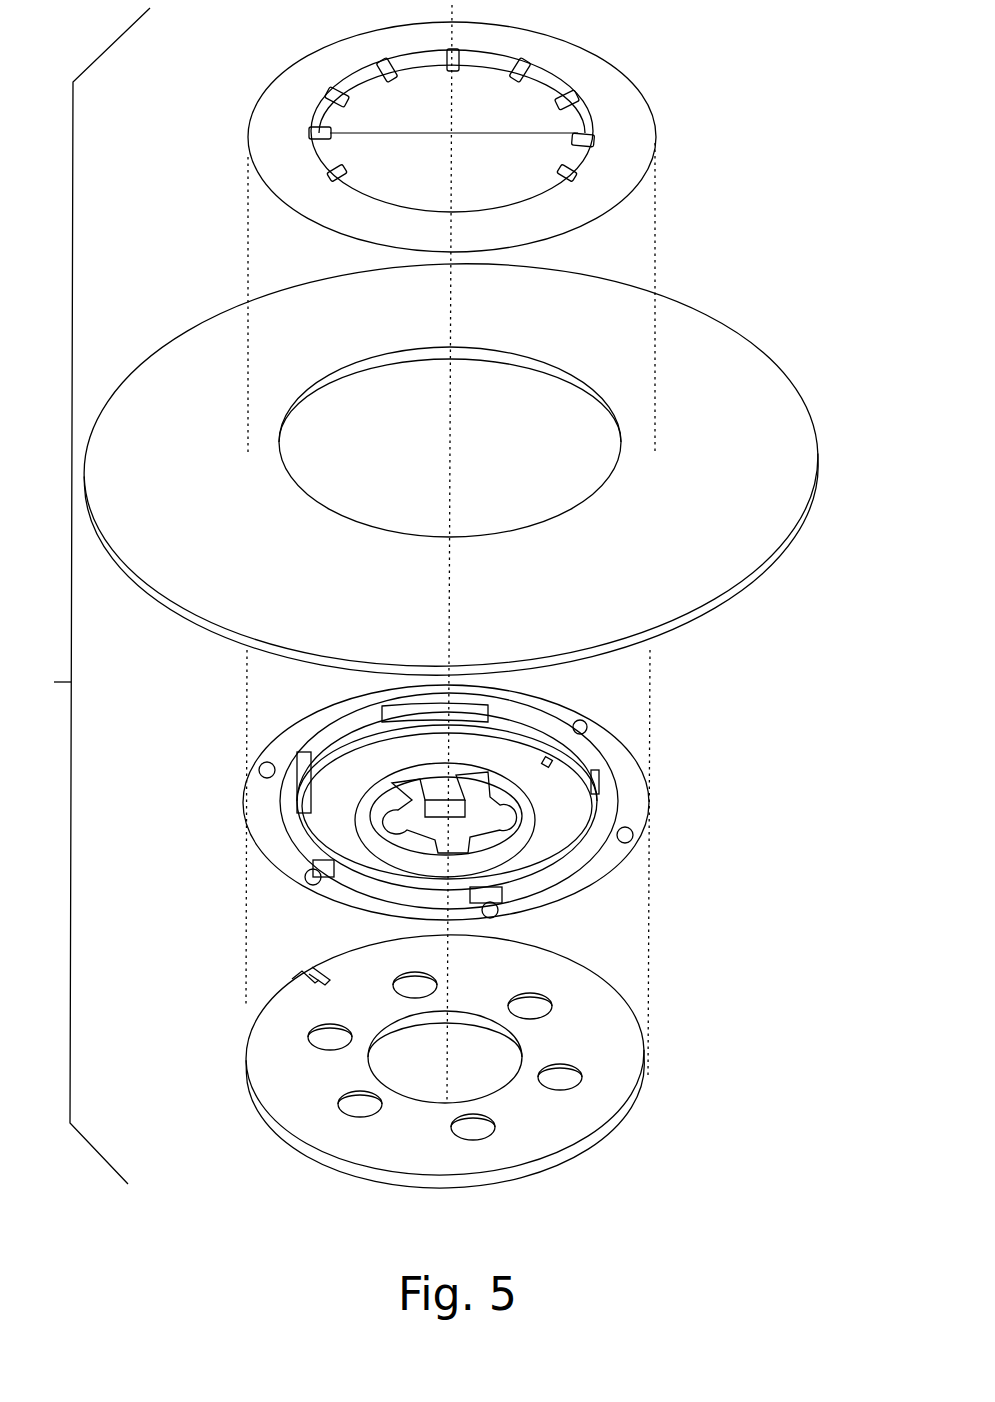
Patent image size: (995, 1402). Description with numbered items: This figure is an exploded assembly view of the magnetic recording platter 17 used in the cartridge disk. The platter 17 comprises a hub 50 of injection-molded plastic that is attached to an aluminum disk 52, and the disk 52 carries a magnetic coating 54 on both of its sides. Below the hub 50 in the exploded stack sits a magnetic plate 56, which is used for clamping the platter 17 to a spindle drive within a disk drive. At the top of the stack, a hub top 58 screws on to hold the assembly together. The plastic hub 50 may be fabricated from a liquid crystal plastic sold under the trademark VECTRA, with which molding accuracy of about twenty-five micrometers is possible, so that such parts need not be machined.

The magnetic recording platter 17 is at (741, 781).
The hub 50 is at (278, 727).
The aluminum disk 52 is at (790, 576).
The magnetic coating 54 is at (199, 353).
The magnetic plate 56 is at (283, 978).
The hub top 58 is at (652, 186).